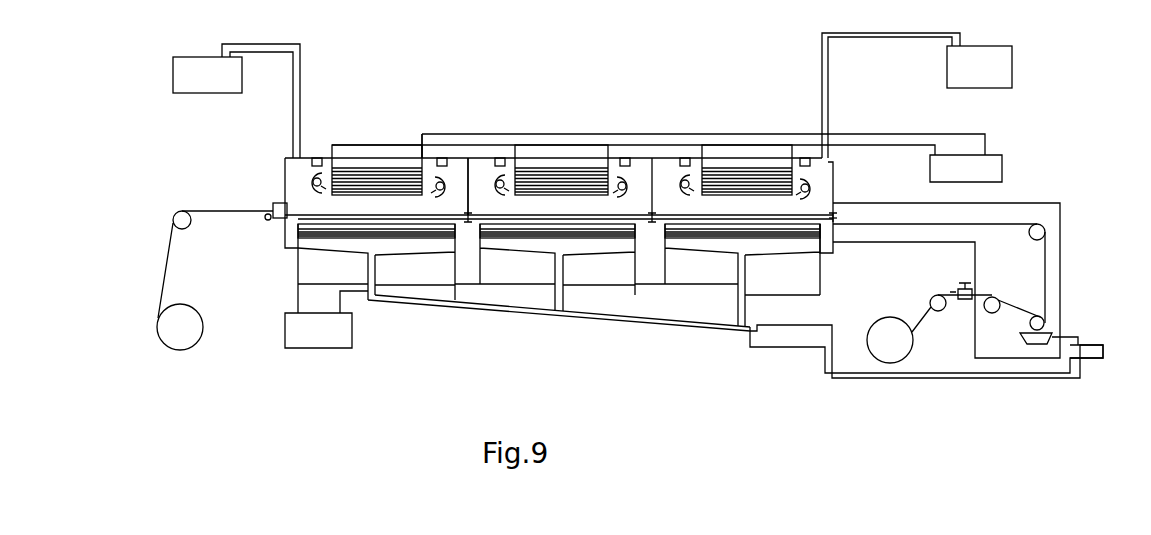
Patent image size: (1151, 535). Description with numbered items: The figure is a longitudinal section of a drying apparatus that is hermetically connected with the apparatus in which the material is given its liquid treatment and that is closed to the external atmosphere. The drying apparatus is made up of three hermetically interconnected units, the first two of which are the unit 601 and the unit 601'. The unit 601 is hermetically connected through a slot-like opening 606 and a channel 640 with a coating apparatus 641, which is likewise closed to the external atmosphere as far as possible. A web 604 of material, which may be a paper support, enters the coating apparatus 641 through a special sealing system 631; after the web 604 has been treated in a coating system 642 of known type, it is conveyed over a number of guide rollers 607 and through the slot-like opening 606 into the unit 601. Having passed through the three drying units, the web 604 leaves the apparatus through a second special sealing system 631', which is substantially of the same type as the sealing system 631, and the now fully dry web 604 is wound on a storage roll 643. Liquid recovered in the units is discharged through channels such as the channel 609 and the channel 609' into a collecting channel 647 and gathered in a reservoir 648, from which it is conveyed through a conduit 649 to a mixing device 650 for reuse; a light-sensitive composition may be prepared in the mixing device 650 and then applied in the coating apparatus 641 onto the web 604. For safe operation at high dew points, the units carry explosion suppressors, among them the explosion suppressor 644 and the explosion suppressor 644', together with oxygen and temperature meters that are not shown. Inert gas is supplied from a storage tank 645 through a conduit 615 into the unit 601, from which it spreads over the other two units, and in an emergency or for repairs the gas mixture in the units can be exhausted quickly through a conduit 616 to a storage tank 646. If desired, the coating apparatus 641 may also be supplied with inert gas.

The drying unit 601 is at (643, 241).
The drying unit 601' is at (496, 150).
The web of material 604 is at (168, 272).
The slot-like opening 606 is at (838, 229).
The guide rollers 607 is at (1048, 228).
The channel 609 is at (782, 275).
The channel 609' is at (599, 267).
The conduit 615 is at (833, 93).
The conduit 616 is at (302, 70).
The sealing system 631 is at (965, 320).
The sealing system 631' is at (260, 185).
The channel 640 is at (879, 230).
The coating apparatus 641 is at (1032, 281).
The coating system 642 is at (1037, 347).
The storage roll 643 is at (182, 351).
The explosion suppressor 644 is at (623, 144).
The explosion suppressor 644' is at (562, 144).
The storage tank 645 is at (1012, 72).
The storage tank 646 is at (185, 92).
The collecting channel 647 is at (573, 313).
The reservoir 648 is at (773, 350).
The conduit 649 is at (927, 373).
The mixing device 650 is at (1090, 343).